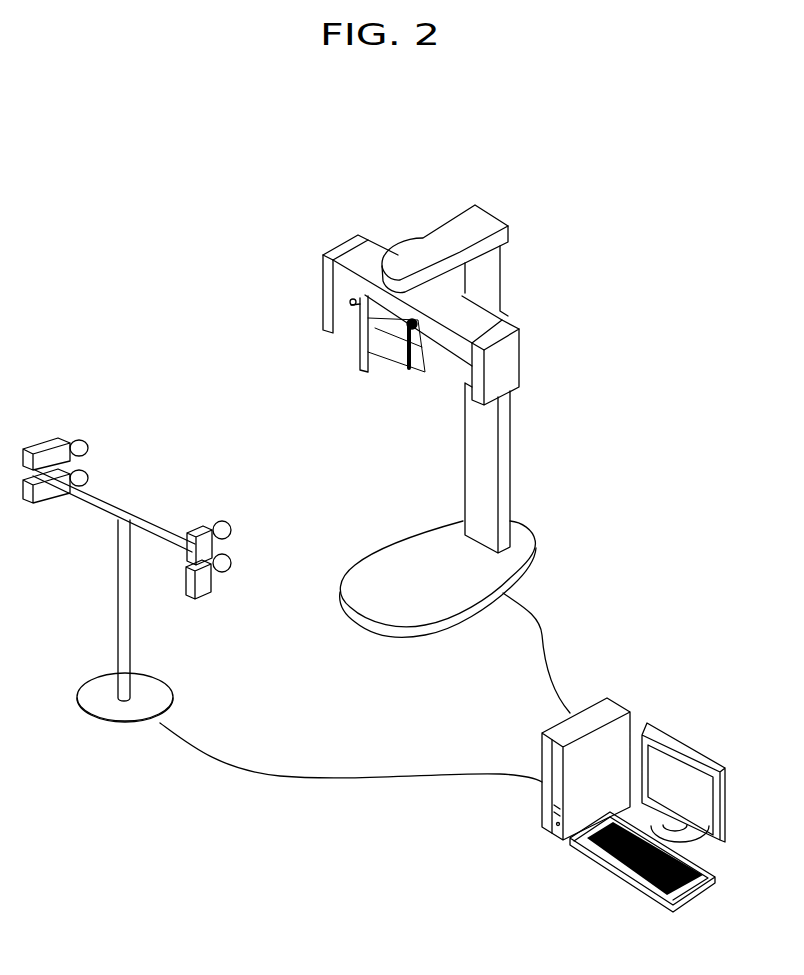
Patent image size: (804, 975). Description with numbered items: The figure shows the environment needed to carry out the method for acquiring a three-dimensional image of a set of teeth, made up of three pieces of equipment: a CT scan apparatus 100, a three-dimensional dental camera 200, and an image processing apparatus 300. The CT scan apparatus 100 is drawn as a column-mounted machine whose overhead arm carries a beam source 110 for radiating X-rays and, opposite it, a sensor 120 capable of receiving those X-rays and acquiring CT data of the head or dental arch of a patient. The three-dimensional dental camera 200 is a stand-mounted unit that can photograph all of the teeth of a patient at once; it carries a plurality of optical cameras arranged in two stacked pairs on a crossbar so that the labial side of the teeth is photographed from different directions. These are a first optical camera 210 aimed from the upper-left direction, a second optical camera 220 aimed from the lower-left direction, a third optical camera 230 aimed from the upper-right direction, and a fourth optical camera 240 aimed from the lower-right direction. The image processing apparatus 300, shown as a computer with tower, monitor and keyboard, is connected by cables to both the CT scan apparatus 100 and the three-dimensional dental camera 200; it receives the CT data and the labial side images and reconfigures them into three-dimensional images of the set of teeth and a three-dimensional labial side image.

The CT scan apparatus 100 is at (364, 192).
The beam source 110 is at (520, 343).
The sensor 120 is at (323, 292).
The 3D dental camera 200 is at (93, 733).
The first optical camera 210 is at (36, 442).
The second optical camera 220 is at (60, 510).
The third optical camera 230 is at (190, 530).
The fourth optical camera 240 is at (223, 608).
The image processing apparatus 300 is at (622, 704).